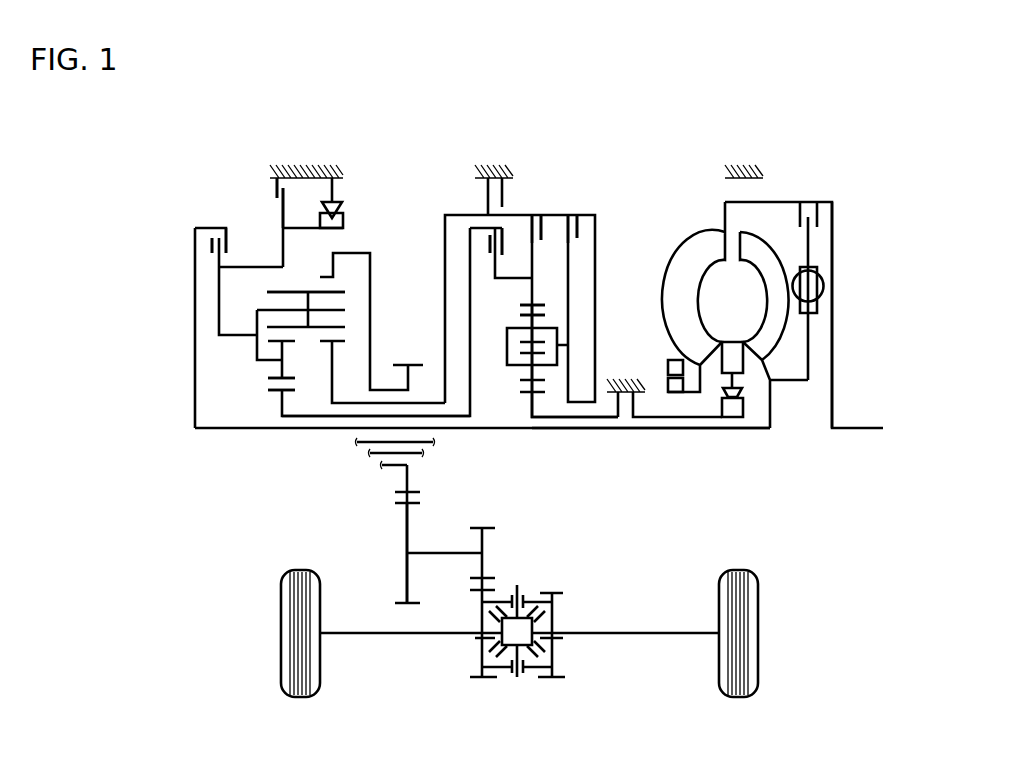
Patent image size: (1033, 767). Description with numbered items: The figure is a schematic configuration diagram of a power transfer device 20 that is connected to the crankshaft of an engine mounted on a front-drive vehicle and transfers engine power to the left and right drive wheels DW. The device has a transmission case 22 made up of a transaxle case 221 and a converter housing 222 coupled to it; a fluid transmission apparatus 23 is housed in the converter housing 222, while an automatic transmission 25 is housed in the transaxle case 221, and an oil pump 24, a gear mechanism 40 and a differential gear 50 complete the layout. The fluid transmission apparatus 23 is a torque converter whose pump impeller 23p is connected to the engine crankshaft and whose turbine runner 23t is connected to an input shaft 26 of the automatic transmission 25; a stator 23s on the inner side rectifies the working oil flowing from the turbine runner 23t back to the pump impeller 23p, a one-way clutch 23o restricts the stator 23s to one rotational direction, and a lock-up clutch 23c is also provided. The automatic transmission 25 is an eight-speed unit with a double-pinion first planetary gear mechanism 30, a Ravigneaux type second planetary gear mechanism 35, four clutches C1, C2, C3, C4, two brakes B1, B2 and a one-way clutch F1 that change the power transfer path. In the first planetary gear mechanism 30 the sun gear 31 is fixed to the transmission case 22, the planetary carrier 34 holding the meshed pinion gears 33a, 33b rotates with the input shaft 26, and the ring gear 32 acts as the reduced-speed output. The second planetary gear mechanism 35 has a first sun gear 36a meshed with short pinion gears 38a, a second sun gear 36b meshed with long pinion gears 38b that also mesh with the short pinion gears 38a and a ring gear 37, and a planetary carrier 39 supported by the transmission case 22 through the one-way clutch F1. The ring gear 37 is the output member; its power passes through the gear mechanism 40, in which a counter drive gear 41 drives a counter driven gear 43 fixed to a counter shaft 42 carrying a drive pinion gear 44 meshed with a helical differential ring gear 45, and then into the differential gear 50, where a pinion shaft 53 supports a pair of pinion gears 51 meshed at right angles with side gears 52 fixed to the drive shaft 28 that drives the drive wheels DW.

The power transfer device 20 is at (575, 131).
The transmission case 22 is at (293, 165).
The transaxle case 221 is at (740, 165).
The converter housing 222 is at (492, 165).
The fluid transmission apparatus 23 is at (712, 219).
The pump impeller 23p is at (700, 258).
The turbine runner 23t is at (762, 255).
The stator 23s is at (733, 346).
The one-way clutch 23o is at (761, 403).
The lock-up clutch 23c is at (825, 242).
The oil pump 24 is at (658, 390).
The automatic transmission 25 is at (410, 188).
The input shaft 26 is at (738, 428).
The drive shaft 28 is at (383, 634).
The first planetary gear mechanism 30 is at (487, 333).
The sun gear 31 is at (530, 394).
The ring gear 32 is at (521, 305).
The pinion gear 33a is at (540, 353).
The pinion gear 33b is at (545, 318).
The planetary carrier 34 is at (557, 355).
The second planetary gear mechanism 35 is at (248, 394).
The first sun gear 36a is at (270, 393).
The second sun gear 36b is at (325, 343).
The ring gear 37 is at (341, 268).
The short pinion gear 38a is at (282, 368).
The long pinion gear 38b is at (277, 292).
The planetary carrier 39 is at (257, 322).
The gear mechanism 40 is at (386, 526).
The counter drive gear 41 is at (400, 488).
The counter shaft 42 is at (437, 553).
The counter driven gear 43 is at (405, 552).
The drive pinion gear 44 is at (490, 528).
The differential ring gear 45 is at (480, 678).
The differential gear 50 is at (579, 604).
The pinion gear 51 is at (528, 616).
The side gear 52 is at (500, 621).
The pinion shaft 53 is at (517, 677).
The brake B1 is at (505, 200).
The brake B2 is at (276, 195).
The clutch C1 is at (489, 245).
The clutch C2 is at (212, 240).
The clutch C3 is at (543, 230).
The clutch C4 is at (578, 232).
The one-way clutch F1 is at (343, 222).
The drive wheel DW is at (281, 633).